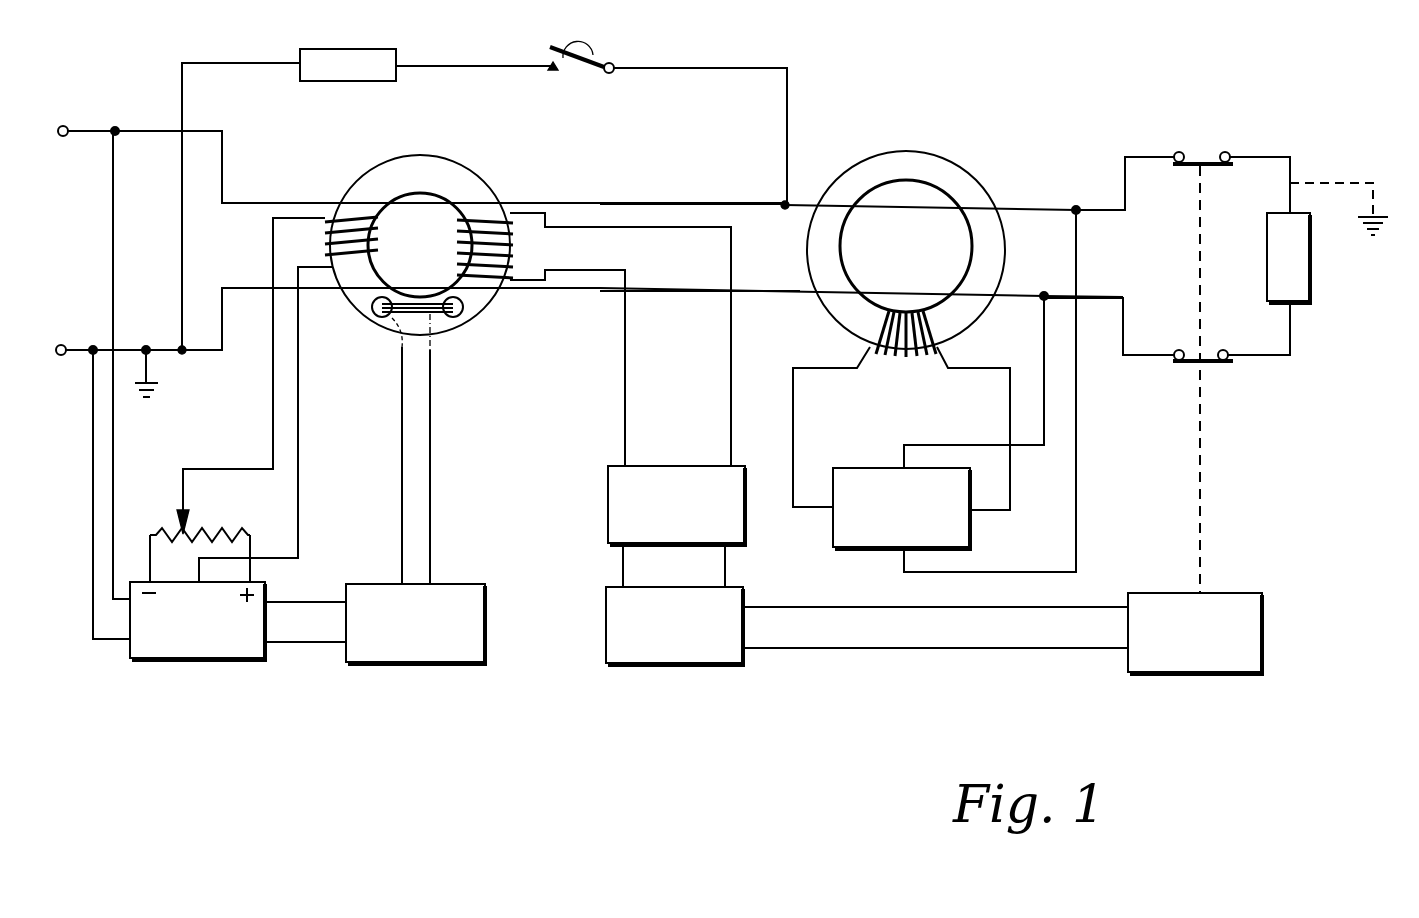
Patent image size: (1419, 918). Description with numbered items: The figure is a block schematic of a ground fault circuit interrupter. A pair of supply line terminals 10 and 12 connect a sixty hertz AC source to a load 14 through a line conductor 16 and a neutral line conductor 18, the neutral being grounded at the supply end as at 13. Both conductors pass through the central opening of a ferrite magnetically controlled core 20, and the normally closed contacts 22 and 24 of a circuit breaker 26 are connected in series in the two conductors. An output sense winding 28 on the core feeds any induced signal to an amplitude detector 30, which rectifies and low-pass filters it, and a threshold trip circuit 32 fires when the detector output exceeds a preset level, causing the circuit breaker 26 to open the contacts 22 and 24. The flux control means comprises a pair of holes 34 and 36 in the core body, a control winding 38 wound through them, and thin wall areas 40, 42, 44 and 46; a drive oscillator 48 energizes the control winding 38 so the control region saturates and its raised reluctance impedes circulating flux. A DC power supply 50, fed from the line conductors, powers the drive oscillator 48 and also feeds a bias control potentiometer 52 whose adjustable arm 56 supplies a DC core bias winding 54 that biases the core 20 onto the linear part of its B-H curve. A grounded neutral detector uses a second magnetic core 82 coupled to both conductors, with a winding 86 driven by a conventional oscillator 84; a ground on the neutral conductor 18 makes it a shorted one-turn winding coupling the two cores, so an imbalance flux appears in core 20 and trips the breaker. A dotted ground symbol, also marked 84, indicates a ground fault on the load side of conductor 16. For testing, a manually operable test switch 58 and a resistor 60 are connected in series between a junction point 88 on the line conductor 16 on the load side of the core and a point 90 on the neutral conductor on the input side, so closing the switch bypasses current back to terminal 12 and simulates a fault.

The supply line terminal 10 is at (67, 126).
The supply line terminal 12 is at (66, 345).
The ground 13 is at (152, 394).
The load 14 is at (1312, 292).
The line conductor 16 is at (740, 200).
The neutral line conductor 18 is at (772, 297).
The magnetically controlled core 20 is at (478, 172).
The normally closed contact 22 is at (1180, 168).
The normally closed contact 24 is at (1180, 365).
The circuit breaker 26 is at (1264, 608).
The output sense winding 28 is at (515, 248).
The amplitude detector 30 is at (610, 490).
The threshold trip circuit 32 is at (608, 605).
The hole 34 is at (465, 305).
The hole 36 is at (372, 310).
The control winding 38 is at (445, 335).
The thin wall area 40 is at (396, 298).
The thin wall area 42 is at (447, 298).
The thin wall area 44 is at (462, 325).
The thin wall area 46 is at (380, 325).
The drive oscillator 48 is at (455, 585).
The DC power supply 50 is at (268, 592).
The bias control potentiometer 52 is at (205, 530).
The DC core bias winding 54 is at (372, 242).
The adjustable arm 56 is at (183, 500).
The test switch 58 is at (603, 55).
The resistor 60 is at (340, 49).
The magnetic core 82 is at (985, 188).
The oscillator 84 is at (855, 468).
The winding 86 is at (905, 355).
The junction point 88 is at (790, 203).
The point 90 is at (180, 346).